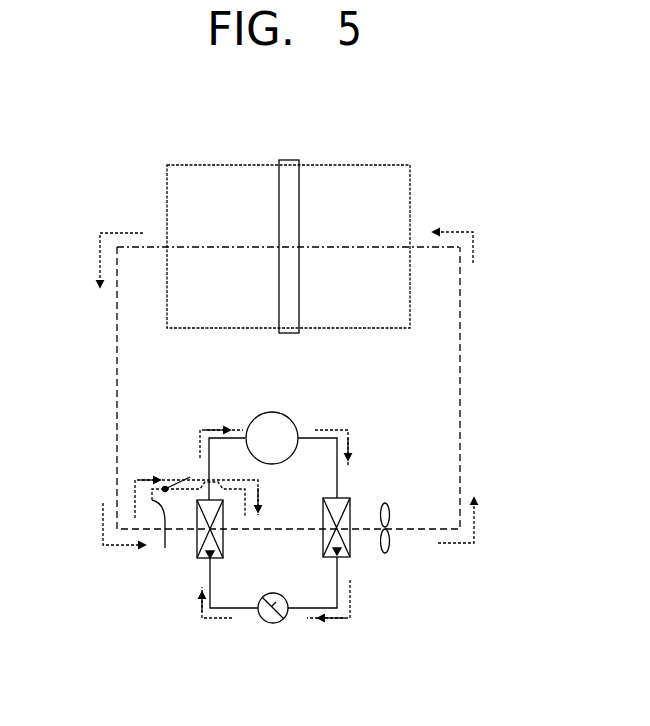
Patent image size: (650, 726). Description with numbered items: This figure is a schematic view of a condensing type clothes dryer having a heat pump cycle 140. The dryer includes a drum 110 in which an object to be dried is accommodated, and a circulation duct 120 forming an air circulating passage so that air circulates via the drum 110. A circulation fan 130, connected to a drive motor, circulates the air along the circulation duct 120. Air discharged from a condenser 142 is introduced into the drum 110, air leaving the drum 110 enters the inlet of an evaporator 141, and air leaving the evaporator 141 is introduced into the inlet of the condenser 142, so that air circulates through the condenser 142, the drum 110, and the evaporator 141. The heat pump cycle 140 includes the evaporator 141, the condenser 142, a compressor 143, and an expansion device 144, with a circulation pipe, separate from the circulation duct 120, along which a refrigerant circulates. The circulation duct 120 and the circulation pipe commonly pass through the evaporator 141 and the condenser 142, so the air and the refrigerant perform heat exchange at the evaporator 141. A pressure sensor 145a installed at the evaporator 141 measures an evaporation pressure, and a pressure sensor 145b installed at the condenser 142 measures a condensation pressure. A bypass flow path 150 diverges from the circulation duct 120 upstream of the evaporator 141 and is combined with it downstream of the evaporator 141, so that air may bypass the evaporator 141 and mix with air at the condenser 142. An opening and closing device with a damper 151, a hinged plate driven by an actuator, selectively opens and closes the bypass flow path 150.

The drum 110 is at (340, 164).
The circulation duct 120 is at (460, 400).
The circulation fan 130 is at (385, 503).
The heat pump cycle 140 is at (188, 428).
The evaporator 141 is at (224, 549).
The condenser 142 is at (351, 549).
The compressor 143 is at (272, 411).
The expansion device 144 is at (273, 624).
The pressure sensor 145a is at (207, 562).
The pressure sensor 145b is at (338, 556).
The bypass flow path 150 is at (165, 548).
The damper 151 is at (182, 474).